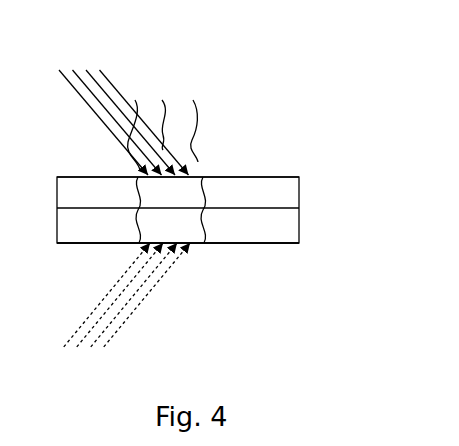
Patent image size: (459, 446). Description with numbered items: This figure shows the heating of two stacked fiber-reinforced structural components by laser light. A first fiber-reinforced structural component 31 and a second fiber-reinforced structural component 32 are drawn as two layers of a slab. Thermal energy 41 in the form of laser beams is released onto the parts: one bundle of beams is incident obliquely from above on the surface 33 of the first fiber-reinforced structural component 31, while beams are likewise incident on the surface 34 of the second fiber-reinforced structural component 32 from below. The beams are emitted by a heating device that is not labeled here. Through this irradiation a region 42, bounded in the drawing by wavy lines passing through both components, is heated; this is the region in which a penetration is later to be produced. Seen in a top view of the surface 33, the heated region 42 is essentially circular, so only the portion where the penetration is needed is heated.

The first fiber-reinforced structural component 31 is at (293, 185).
The second fiber-reinforced structural component 32 is at (293, 220).
The surface of the first fiber-reinforced structural component 33 is at (249, 168).
The surface of the second fiber-reinforced structural component 34 is at (248, 252).
The thermal energy 41 is at (114, 71).
The region 42 is at (155, 198).